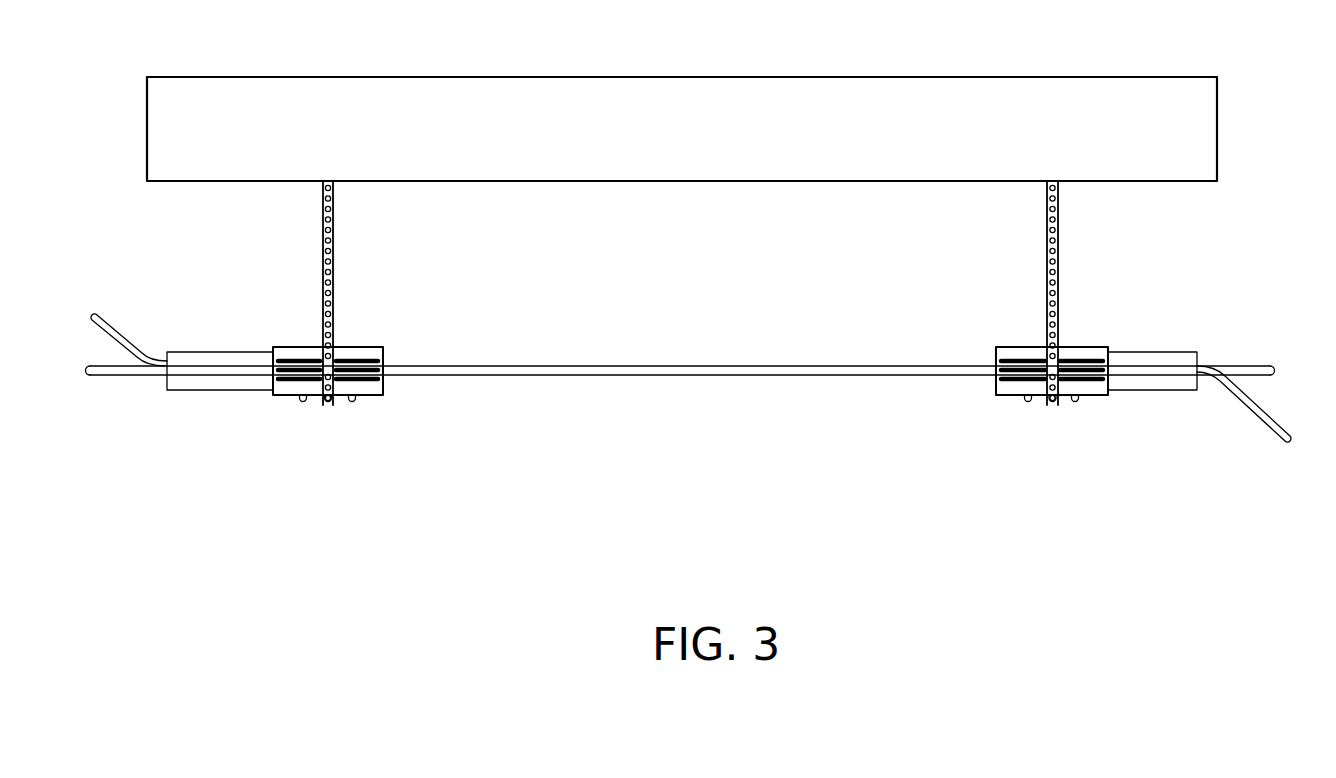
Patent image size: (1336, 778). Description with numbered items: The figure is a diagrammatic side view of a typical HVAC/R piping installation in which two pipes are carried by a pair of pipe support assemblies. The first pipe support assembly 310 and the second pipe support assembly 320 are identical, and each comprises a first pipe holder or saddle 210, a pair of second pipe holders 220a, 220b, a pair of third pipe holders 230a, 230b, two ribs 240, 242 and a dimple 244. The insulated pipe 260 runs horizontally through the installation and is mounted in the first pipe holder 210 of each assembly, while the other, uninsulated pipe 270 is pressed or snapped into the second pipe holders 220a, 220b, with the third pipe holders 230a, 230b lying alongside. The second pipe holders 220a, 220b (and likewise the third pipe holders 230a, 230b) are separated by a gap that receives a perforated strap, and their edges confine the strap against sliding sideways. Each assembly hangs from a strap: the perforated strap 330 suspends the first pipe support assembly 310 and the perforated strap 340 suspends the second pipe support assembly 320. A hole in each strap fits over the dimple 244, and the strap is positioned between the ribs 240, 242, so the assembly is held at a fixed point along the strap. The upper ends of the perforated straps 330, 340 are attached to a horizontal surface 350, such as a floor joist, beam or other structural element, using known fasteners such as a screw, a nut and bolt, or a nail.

The first pipe holder 210 is at (293, 346).
The second pipe holder 220a is at (266, 356).
The second pipe holder 220b is at (364, 362).
The third pipe holder 230a is at (266, 391).
The third pipe holder 230b is at (1101, 393).
The rib 240 is at (300, 404).
The rib 242 is at (353, 404).
The dimple 244 is at (324, 405).
The insulated pipe 260 is at (98, 380).
The uninsulated pipe 270 is at (97, 320).
The first pipe support assembly 310 is at (330, 424).
The second pipe support assembly 320 is at (1056, 421).
The perforated strap 330 is at (333, 223).
The perforated strap 340 is at (1058, 250).
The horizontal surface 350 is at (1217, 122).